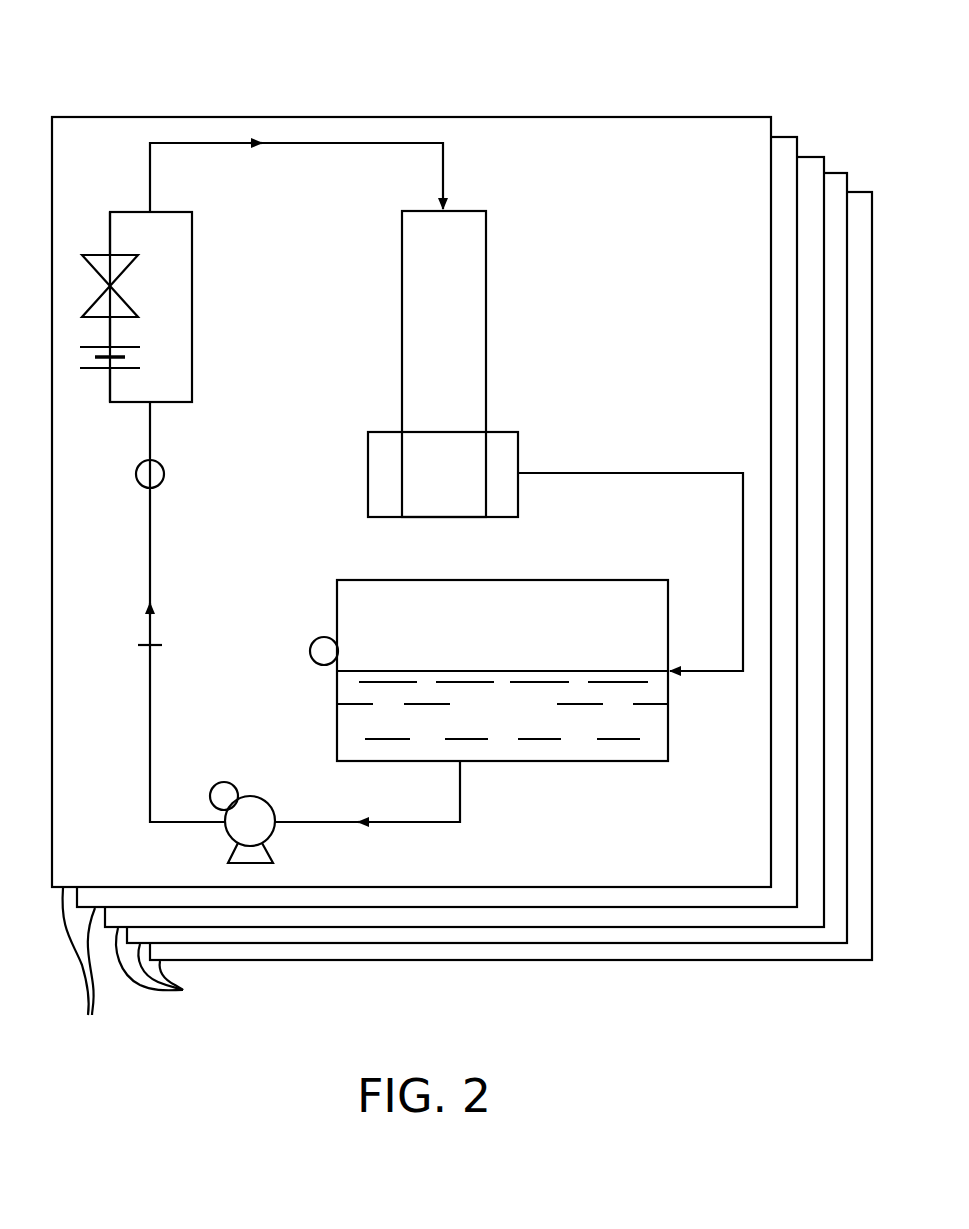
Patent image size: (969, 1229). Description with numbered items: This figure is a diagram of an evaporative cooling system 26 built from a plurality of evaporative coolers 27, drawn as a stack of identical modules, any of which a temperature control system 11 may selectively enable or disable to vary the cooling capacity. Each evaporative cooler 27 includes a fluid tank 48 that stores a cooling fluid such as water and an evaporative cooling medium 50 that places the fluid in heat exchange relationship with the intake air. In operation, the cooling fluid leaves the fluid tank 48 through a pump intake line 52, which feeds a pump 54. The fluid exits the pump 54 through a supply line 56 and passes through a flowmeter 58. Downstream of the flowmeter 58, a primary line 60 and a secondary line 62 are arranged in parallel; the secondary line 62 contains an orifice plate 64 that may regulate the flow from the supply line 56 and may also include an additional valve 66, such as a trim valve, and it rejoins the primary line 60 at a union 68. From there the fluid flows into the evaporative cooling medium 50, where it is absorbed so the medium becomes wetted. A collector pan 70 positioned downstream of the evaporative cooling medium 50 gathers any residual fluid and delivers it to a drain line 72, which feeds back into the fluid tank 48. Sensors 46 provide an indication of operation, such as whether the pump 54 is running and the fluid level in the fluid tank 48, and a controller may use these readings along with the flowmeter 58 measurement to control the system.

The temperature control system 11 is at (96, 67).
The evaporative cooling system 26 is at (797, 67).
The evaporative cooler 27 is at (140, 967).
The sensor 46 is at (314, 640).
The fluid tank 48 is at (646, 762).
The evaporative cooling medium 50 is at (487, 239).
The pump intake line 52 is at (410, 823).
The pump 54 is at (232, 851).
The supply line 56 is at (149, 742).
The flowmeter 58 is at (165, 474).
The primary line 60 is at (192, 305).
The secondary line 62 is at (111, 331).
The orifice plate 64 is at (98, 370).
The valve 66 is at (100, 254).
The union 68 is at (151, 206).
The collector pan 70 is at (519, 452).
The drain line 72 is at (742, 592).